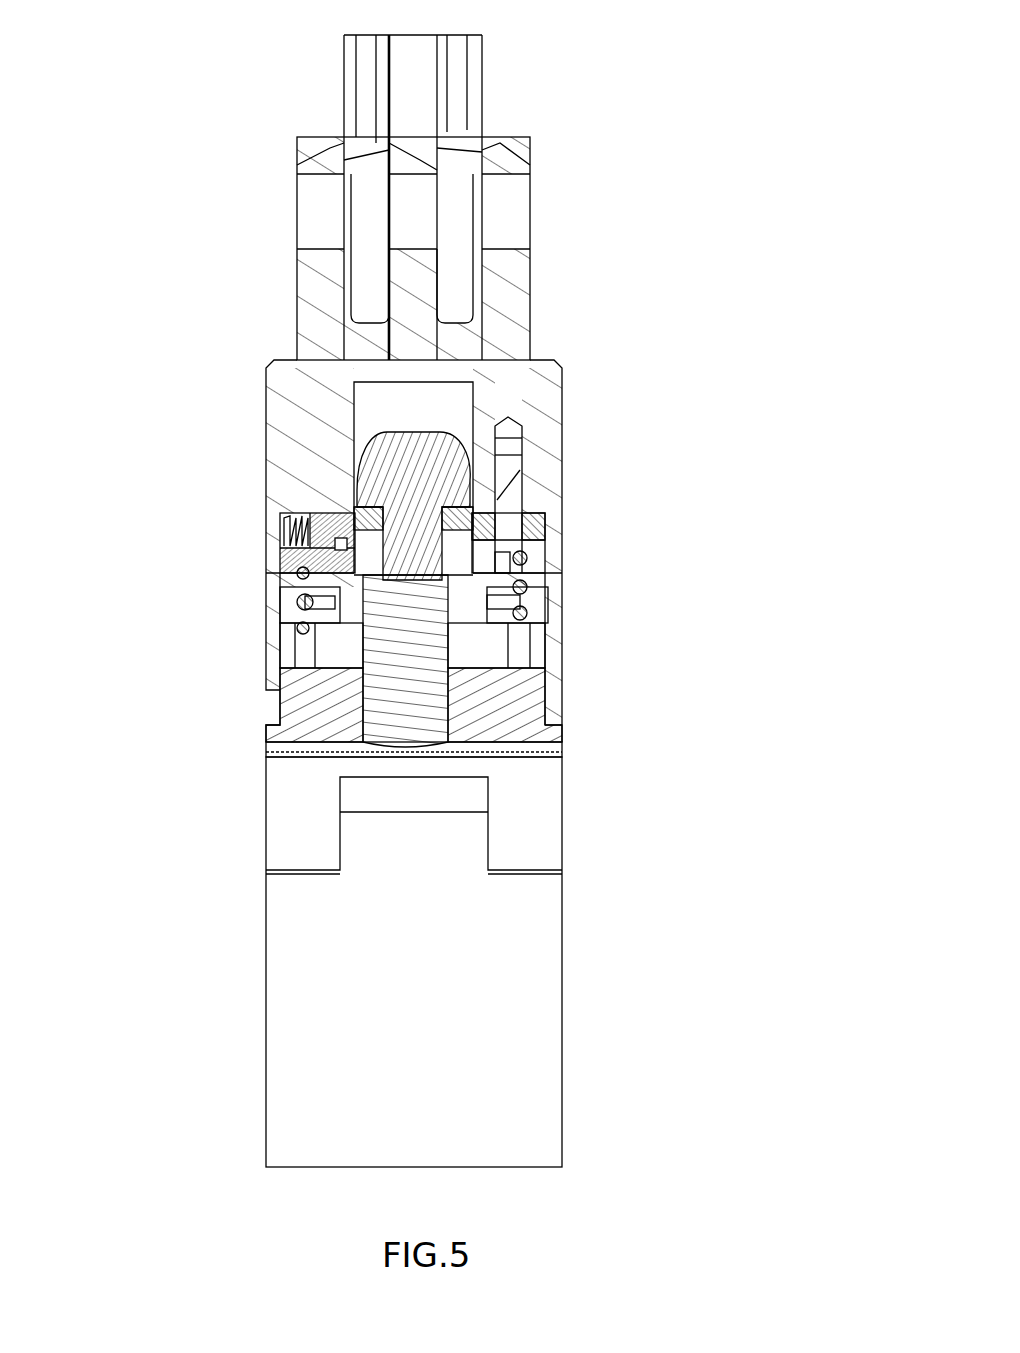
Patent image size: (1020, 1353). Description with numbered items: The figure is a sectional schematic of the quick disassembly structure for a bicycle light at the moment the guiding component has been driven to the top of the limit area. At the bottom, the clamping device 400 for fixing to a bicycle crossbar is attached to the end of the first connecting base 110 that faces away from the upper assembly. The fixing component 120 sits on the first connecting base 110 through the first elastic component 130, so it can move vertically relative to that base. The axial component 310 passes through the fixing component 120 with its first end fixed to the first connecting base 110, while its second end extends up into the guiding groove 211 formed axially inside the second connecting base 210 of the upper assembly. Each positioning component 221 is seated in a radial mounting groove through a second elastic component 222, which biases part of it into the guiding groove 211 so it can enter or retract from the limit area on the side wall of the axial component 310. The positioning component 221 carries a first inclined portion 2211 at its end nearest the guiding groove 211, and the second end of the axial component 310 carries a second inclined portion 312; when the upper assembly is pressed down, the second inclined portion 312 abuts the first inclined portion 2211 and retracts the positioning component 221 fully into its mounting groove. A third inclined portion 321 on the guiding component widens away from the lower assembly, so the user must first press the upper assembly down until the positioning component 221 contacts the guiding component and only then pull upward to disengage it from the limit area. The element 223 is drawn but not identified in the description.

The first connecting base 110 is at (530, 733).
The fixing component 120 is at (553, 684).
The first elastic component 130 is at (518, 618).
The second connecting base 210 is at (550, 450).
The guiding groove 211 is at (447, 416).
The positioning component 221 is at (318, 540).
The first inclined portion 2211 is at (350, 532).
The second elastic component 222 is at (288, 530).
The locating pin 223 is at (540, 530).
The axial component 310 is at (383, 703).
The second inclined portion 312 is at (375, 467).
The third inclined portion 321 is at (460, 525).
The clamping device 400 is at (550, 900).